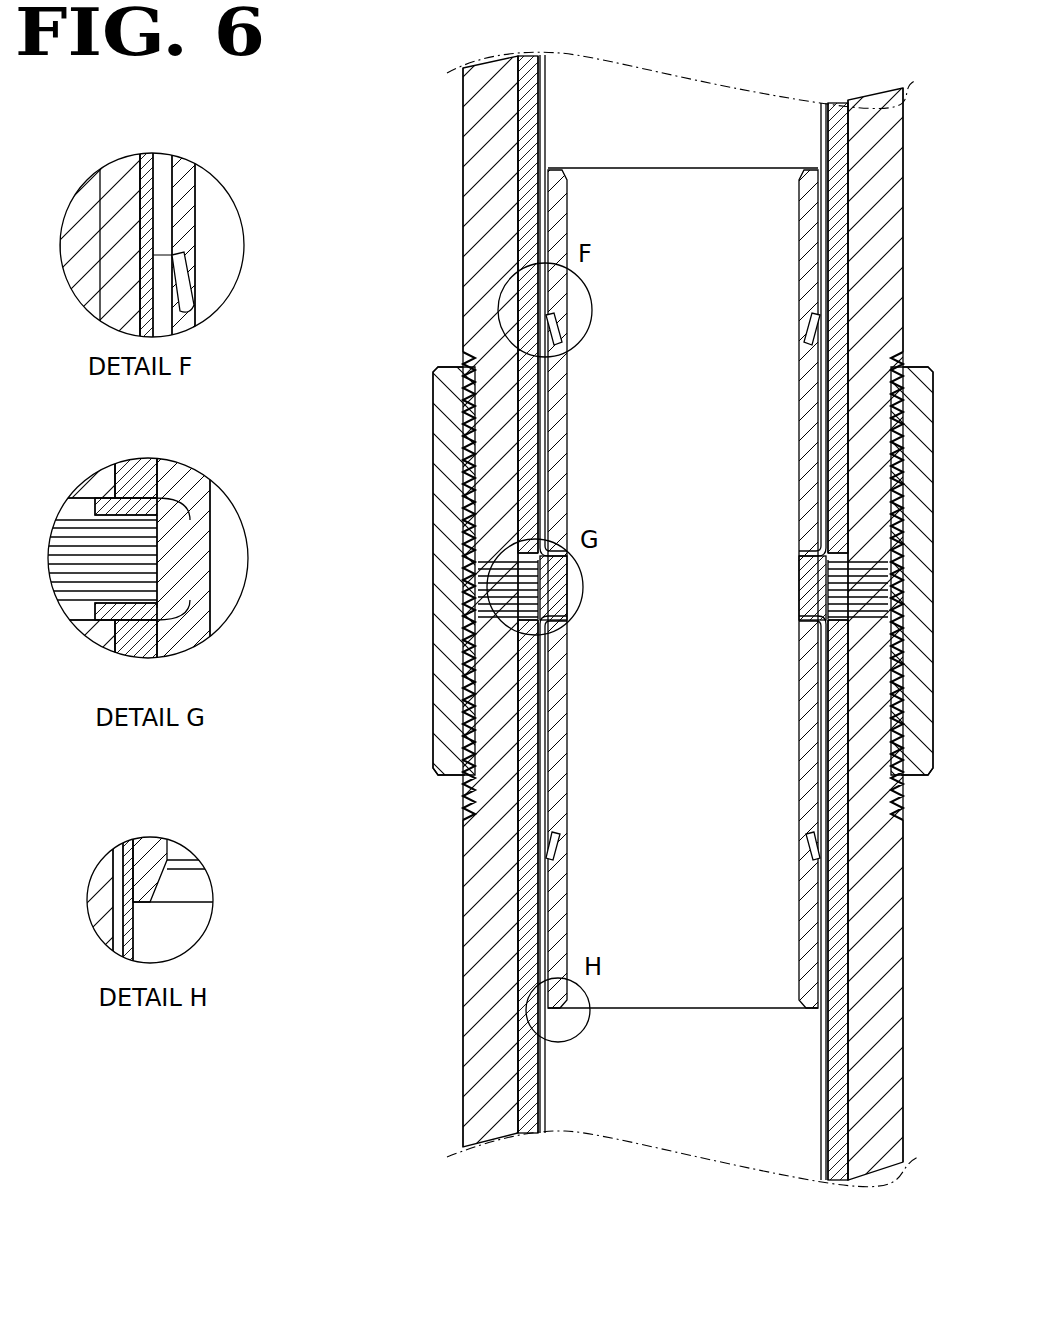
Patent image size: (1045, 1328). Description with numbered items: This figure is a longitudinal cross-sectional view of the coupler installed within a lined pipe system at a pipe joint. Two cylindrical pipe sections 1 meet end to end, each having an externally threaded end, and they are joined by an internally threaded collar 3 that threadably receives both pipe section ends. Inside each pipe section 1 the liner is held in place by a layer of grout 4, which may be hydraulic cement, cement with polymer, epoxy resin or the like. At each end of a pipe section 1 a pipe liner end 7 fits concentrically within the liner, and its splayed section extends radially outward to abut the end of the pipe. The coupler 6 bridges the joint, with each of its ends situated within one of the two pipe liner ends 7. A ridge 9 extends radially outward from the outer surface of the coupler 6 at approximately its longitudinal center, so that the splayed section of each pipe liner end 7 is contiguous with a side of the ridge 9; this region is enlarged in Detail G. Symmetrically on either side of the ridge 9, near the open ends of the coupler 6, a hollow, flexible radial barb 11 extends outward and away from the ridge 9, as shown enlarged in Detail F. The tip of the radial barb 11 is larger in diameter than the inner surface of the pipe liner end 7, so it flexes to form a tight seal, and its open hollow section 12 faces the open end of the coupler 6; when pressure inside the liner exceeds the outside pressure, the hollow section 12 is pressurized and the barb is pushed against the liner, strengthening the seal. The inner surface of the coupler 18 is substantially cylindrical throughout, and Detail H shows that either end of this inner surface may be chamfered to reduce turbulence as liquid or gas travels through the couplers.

The pipe section 1 is at (463, 298).
The internally threaded collar 3 is at (430, 582).
The grout 4 is at (516, 205).
The coupler 6 is at (685, 167).
The pipe liner end 7 is at (535, 730).
The ridge 9 is at (145, 553).
The radial barb 11 is at (157, 268).
The open hollow section 12 is at (170, 273).
The inner surface of the coupler 18 is at (158, 885).